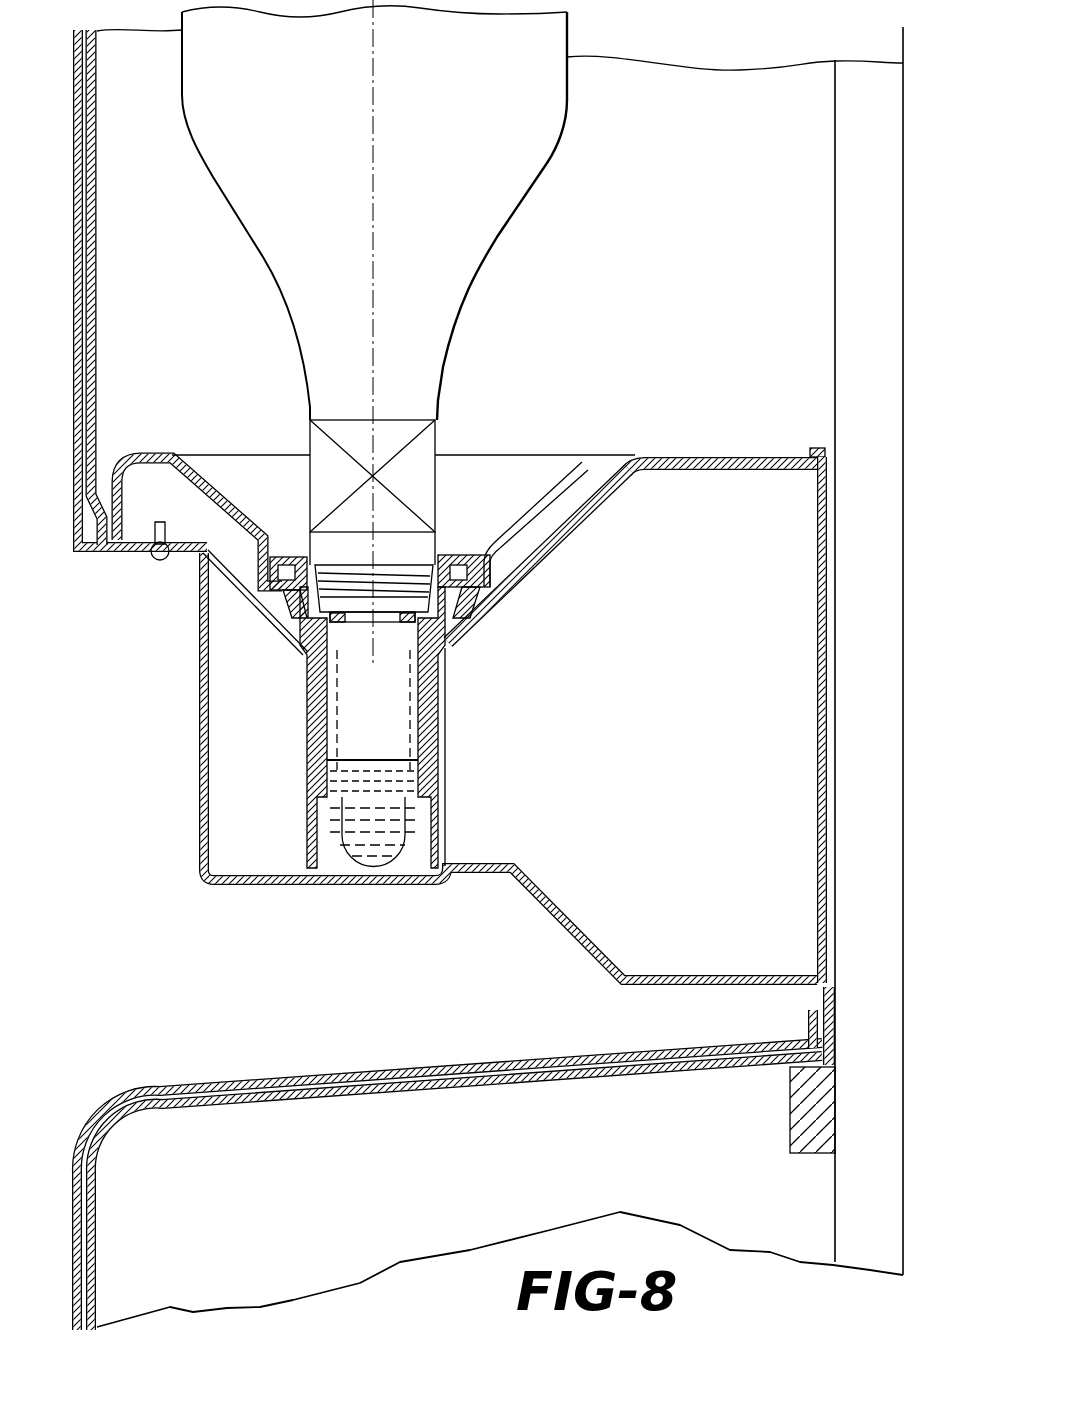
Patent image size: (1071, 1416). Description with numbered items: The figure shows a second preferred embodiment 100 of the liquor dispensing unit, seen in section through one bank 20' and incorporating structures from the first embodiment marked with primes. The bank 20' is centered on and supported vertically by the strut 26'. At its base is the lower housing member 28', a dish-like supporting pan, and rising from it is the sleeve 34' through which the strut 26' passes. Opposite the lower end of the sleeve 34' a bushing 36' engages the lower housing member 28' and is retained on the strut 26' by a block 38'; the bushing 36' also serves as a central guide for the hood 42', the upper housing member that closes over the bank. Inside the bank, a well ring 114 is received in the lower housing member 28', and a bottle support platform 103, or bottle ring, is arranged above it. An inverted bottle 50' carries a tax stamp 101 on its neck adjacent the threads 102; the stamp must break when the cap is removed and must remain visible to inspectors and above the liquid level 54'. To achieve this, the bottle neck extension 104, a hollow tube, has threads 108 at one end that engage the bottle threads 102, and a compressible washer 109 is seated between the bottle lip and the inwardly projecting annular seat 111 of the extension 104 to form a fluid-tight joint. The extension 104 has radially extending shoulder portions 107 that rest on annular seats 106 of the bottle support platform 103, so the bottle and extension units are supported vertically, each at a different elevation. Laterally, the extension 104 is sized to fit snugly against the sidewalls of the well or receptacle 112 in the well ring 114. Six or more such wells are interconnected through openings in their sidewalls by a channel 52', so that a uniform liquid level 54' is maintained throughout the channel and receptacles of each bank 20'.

The second preferred embodiment 100 is at (70, 62).
The bottle 50' is at (374, 332).
The strut 26' is at (500, 677).
The bank 20' is at (421, 680).
The hood 42' is at (456, 680).
The bottle support platform 103 is at (605, 457).
The well ring 114 is at (579, 526).
The sleeve 34' is at (782, 720).
The lower housing member 28' is at (510, 765).
The bushing 36' is at (772, 1026).
The block 38' is at (775, 1110).
The tax stamp 101 is at (385, 519).
The threads 102 is at (336, 577).
The annular seat 111 is at (340, 625).
The annular seats 106 is at (480, 588).
The shoulder portions 107 is at (470, 555).
The threads 108 is at (460, 620).
The bottle neck extension 104 is at (318, 680).
The compressible washer 109 is at (402, 632).
The liquid level 54' is at (410, 759).
The channel 52' is at (416, 832).
The well 112 is at (323, 836).